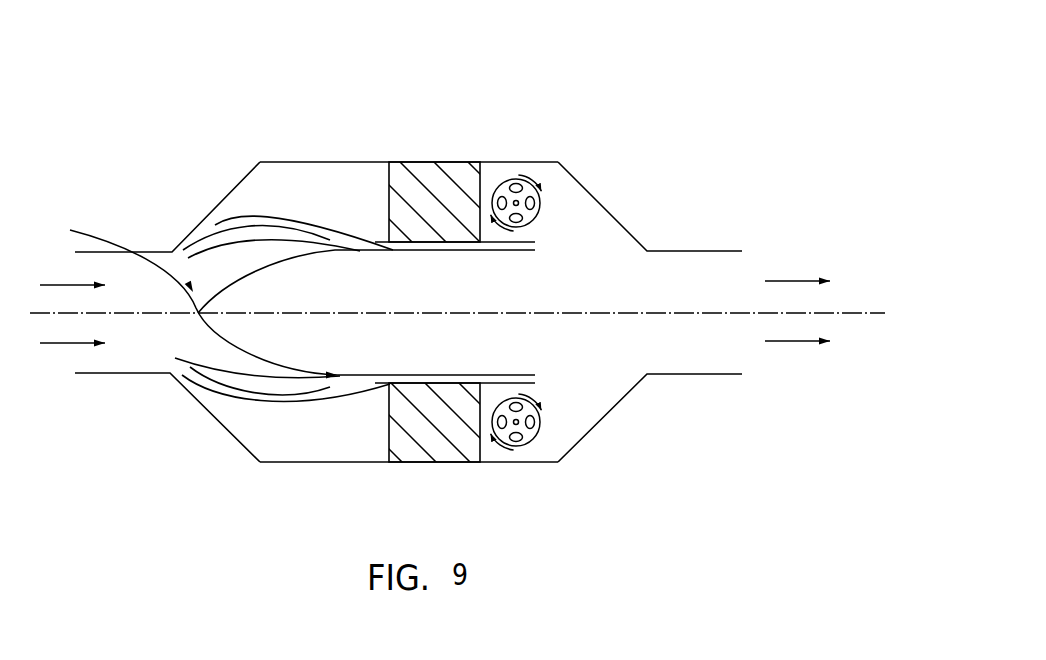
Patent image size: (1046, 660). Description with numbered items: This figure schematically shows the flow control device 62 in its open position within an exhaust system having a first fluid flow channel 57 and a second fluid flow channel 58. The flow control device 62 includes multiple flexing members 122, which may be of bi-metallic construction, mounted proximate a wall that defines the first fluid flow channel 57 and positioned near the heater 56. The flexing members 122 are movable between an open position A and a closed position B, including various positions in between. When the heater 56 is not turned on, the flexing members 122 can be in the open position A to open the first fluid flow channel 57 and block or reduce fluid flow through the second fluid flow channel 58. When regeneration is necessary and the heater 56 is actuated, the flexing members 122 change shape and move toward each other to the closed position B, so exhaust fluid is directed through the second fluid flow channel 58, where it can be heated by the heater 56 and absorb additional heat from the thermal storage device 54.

The flow control device 62 is at (215, 158).
The flexing members 122 is at (297, 213).
The open position A is at (215, 222).
The closed position B is at (291, 296).
The heater 56 is at (413, 156).
The thermal storage device 54 is at (512, 178).
The second fluid flow channel 58 is at (583, 220).
The first fluid flow channel 57 is at (553, 342).